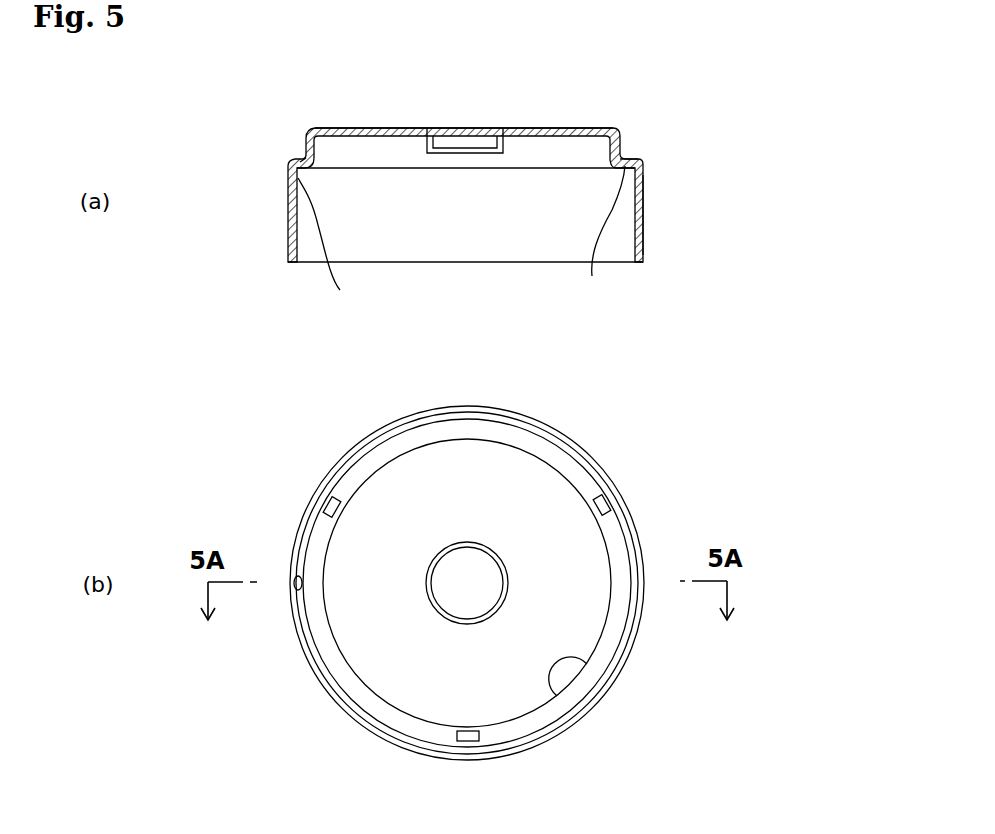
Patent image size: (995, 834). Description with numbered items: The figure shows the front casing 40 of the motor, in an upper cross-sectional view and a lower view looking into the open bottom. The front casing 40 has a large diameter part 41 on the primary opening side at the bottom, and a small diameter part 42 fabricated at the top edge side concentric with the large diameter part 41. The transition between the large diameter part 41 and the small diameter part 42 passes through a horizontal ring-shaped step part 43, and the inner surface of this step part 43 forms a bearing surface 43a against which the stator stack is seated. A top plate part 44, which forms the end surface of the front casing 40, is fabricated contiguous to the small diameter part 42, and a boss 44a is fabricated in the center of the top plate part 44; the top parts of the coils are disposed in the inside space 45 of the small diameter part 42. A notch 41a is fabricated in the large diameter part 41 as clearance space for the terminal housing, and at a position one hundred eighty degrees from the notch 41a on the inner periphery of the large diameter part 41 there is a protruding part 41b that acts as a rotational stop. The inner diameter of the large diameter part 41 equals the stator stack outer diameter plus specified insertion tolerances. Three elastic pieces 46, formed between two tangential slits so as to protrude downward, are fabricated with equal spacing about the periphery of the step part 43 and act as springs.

The front casing 40 is at (702, 185).
The large diameter part 41 is at (287, 220).
The notch 41a is at (645, 237).
The protruding part (rotational stop means) 41b is at (301, 583).
The small diameter part 42 is at (310, 134).
The step part 43 is at (299, 160).
The bearing surface 43a is at (562, 458).
The top plate part 44 is at (385, 130).
The boss 44a is at (531, 134).
The inside space 45 is at (596, 133).
The elastic pieces (springs) 46 is at (326, 502).